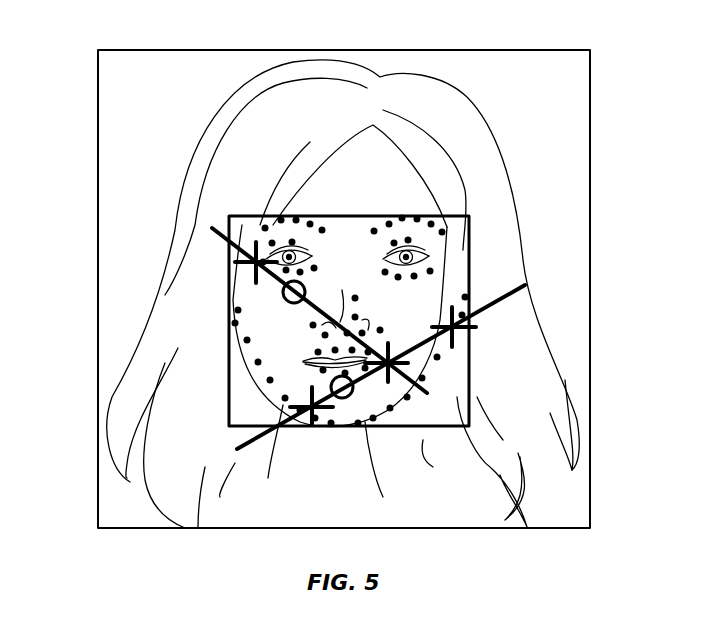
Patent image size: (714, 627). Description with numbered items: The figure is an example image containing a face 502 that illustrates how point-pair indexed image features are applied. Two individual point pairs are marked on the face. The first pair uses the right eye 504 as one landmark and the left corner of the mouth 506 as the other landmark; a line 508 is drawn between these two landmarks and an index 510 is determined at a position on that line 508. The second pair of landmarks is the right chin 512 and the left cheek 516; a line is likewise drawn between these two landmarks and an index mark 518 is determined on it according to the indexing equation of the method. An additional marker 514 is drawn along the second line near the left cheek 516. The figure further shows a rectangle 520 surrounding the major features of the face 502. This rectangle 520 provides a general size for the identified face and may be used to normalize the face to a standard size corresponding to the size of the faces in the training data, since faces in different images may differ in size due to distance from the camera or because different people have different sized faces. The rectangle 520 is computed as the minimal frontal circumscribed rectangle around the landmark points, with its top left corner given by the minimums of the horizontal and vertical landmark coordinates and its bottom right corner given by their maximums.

The face 502 is at (432, 167).
The right eye 504 is at (212, 228).
The left corner of the mouth 506 is at (405, 378).
The line 508 is at (312, 305).
The index 510 is at (284, 296).
The right chin 512 is at (314, 411).
The first line endpoint marker 514 is at (460, 334).
The left cheek 516 is at (390, 364).
The index mark 518 is at (383, 497).
The rectangle 520 is at (469, 242).